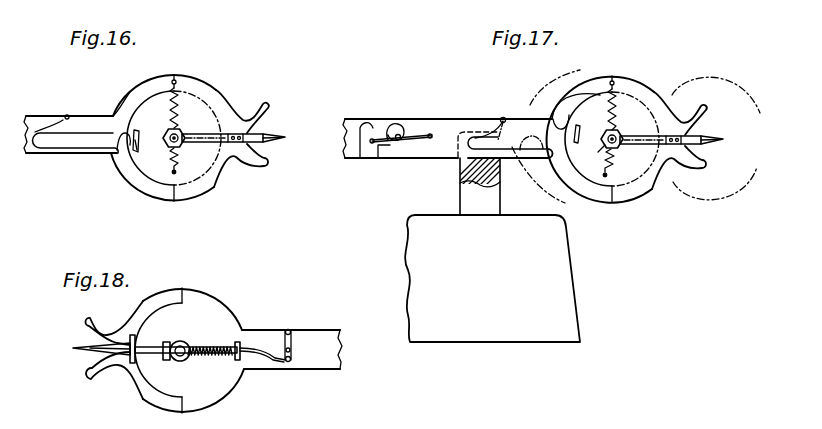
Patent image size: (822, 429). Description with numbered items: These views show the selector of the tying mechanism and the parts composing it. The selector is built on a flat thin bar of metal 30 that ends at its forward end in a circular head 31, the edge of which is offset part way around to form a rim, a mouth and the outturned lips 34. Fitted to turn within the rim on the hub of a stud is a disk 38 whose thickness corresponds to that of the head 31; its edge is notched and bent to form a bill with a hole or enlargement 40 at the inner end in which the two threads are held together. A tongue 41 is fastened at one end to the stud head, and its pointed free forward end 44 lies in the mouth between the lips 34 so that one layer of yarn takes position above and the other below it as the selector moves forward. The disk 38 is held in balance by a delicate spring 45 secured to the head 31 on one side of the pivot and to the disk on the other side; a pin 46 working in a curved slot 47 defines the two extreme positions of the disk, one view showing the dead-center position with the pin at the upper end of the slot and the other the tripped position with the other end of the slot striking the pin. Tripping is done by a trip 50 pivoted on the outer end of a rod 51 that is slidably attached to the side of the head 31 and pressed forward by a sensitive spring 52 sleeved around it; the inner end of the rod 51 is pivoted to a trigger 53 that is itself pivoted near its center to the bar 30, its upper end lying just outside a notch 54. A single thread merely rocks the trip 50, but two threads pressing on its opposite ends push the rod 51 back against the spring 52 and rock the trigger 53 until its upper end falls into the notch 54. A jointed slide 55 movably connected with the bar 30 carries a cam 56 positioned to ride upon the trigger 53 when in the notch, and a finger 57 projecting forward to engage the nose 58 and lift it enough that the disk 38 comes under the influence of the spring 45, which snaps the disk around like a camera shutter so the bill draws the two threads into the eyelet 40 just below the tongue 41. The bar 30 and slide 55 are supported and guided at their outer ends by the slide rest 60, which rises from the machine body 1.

In FIG. 17, the body / base 1 is at (567, 293).
In FIG. 18, the handle member 30 is at (324, 366).
In FIG. 17, the ring 31 is at (642, 192).
In FIG. 18, the ring 31 is at (220, 388).
In FIG. 16, the handle arms 34 is at (268, 105).
In FIG. 17, the handle arms 34 is at (707, 111).
In FIG. 18, the handle arms 34 is at (88, 319).
In FIG. 16, the disc 38 is at (193, 172).
In FIG. 17, the disc 38 is at (603, 180).
In FIG. 17, the pin 40 is at (658, 145).
In FIG. 16, the arm 41 is at (190, 133).
In FIG. 17, the arm 41 is at (626, 135).
In FIG. 16, the blade 44 is at (268, 134).
In FIG. 17, the blade 44 is at (709, 141).
In FIG. 18, the blade 44 is at (73, 348).
In FIG. 16, the spring 45 is at (177, 130).
In FIG. 17, the spring 45 is at (613, 131).
In FIG. 16, the pawl 46 is at (138, 138).
In FIG. 17, the pawl 46 is at (590, 156).
In FIG. 16, the pivot 47 is at (137, 150).
In FIG. 17, the pivot 47 is at (578, 126).
In FIG. 18, the plate 50 is at (131, 364).
In FIG. 18, the rod 51 is at (153, 344).
In FIG. 18, the spring housing 52 is at (217, 347).
In FIG. 16, the latch 53 is at (67, 116).
In FIG. 17, the latch 53 is at (503, 117).
In FIG. 18, the latch 53 is at (292, 349).
In FIG. 17, the pin 54 is at (505, 118).
In FIG. 18, the pin 54 is at (290, 329).
In FIG. 16, the bar 55 is at (36, 155).
In FIG. 17, the bar 55 is at (412, 152).
In FIG. 16, the slot 56 is at (50, 135).
In FIG. 17, the slot 56 is at (503, 142).
In FIG. 16, the lip 57 is at (90, 155).
In FIG. 17, the lip 57 is at (525, 159).
In FIG. 16, the lever 58 is at (119, 118).
In FIG. 17, the lever 58 is at (563, 107).
In FIG. 17, the post 60 is at (460, 182).